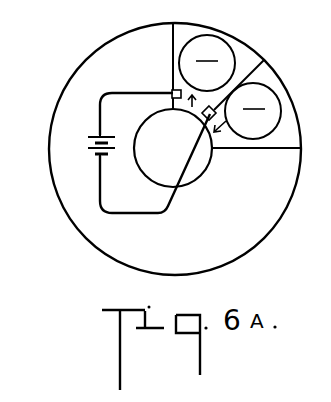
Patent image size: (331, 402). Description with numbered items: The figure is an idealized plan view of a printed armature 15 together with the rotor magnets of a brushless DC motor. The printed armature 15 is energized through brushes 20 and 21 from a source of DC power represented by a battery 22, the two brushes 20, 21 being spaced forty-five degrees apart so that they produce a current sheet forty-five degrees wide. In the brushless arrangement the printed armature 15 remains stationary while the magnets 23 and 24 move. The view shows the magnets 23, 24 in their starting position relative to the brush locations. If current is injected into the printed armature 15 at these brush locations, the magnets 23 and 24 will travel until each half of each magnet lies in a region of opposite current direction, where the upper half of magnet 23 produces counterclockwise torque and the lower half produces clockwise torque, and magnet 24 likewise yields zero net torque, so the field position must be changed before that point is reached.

The printed armature 15 is at (88, 56).
The brush 20 is at (201, 110).
The brush 21 is at (171, 90).
The battery 22 is at (85, 148).
The magnet 23 is at (207, 63).
The magnet 24 is at (241, 111).